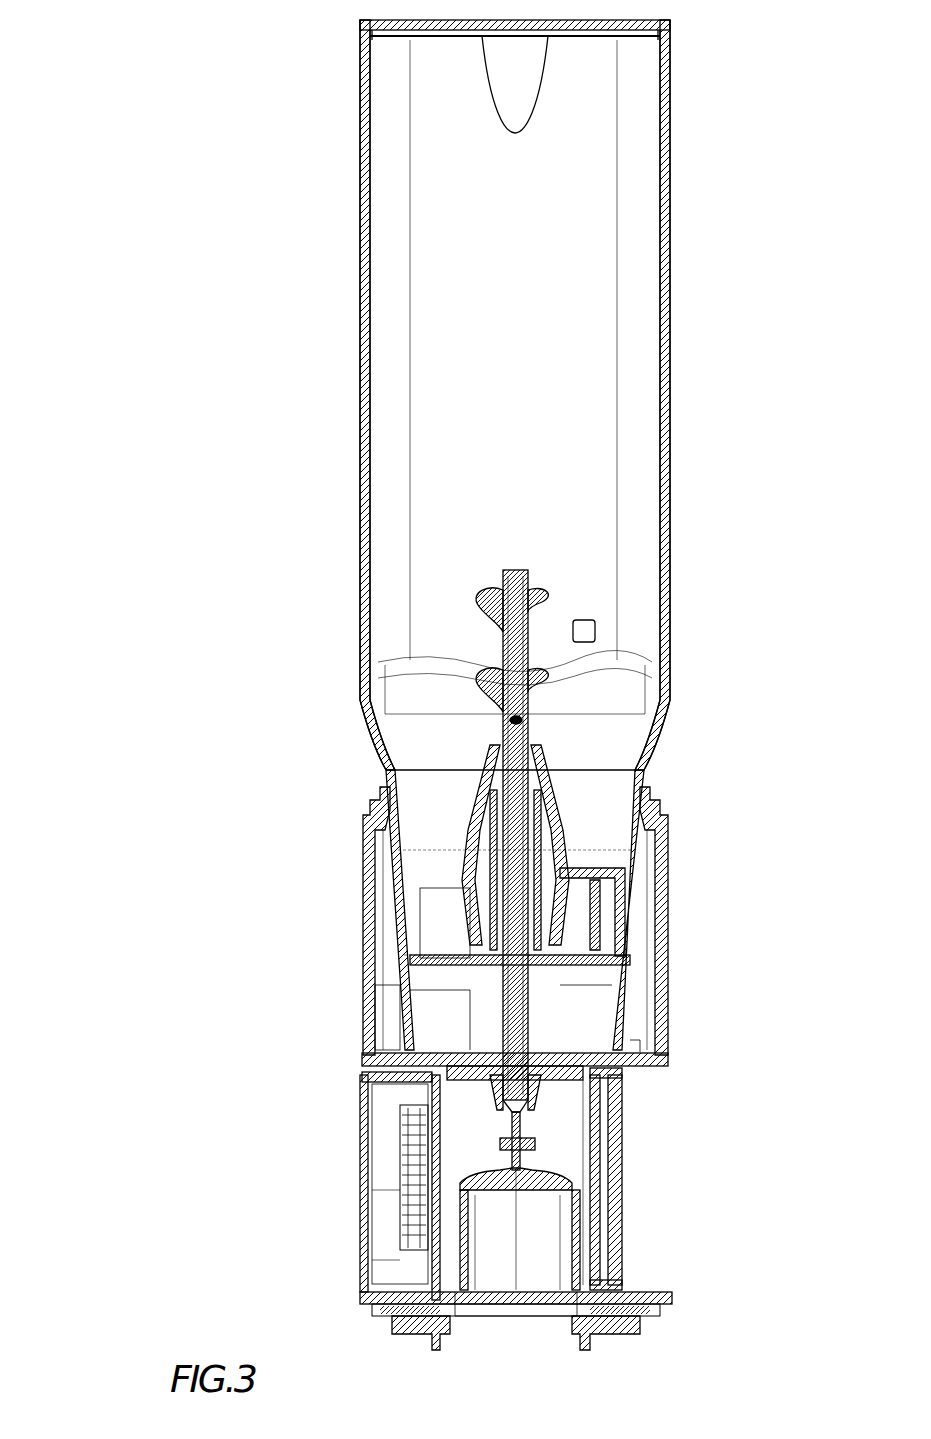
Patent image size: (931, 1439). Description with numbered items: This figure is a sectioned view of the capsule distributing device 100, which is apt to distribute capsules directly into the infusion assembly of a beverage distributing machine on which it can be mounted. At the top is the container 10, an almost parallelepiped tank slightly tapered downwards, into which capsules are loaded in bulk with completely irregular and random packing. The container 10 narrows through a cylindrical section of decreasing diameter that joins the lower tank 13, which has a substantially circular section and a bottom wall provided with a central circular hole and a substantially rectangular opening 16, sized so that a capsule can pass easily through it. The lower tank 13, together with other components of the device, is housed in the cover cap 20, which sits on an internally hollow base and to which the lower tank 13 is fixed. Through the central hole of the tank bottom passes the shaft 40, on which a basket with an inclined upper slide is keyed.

The capsule distributing device 100 is at (198, 779).
The container 10 is at (668, 285).
The lower tank 13 is at (628, 885).
The substantially rectangular opening 16 is at (490, 958).
The cover cap 20 is at (667, 957).
The shaft 40 is at (520, 778).